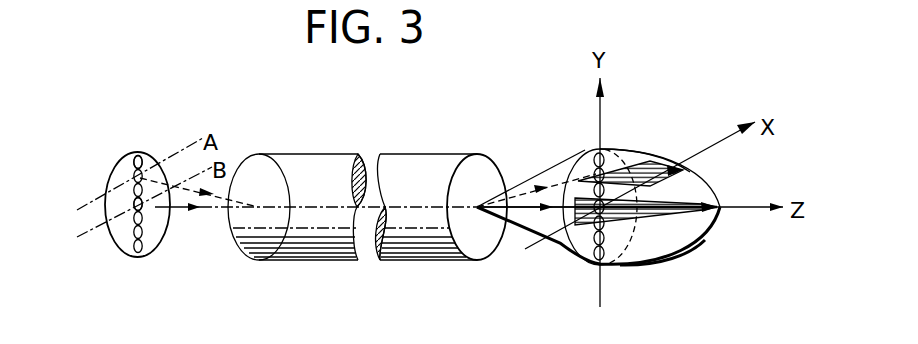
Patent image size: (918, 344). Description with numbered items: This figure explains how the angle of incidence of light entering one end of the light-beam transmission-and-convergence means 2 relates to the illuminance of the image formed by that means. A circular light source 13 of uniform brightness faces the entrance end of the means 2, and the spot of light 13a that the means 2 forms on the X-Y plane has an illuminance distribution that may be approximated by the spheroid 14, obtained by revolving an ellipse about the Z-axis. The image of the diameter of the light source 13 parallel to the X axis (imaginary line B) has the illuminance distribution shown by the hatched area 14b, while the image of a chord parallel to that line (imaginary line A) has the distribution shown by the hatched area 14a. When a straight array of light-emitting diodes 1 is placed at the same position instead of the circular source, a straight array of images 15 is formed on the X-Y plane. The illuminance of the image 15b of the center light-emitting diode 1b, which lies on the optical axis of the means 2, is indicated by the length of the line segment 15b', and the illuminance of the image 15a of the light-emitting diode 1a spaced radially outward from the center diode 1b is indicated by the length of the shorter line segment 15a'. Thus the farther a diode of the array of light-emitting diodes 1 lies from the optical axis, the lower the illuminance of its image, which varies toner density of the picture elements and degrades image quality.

The light-emitting diodes 1 is at (135, 257).
The light-emitting diode 1a is at (137, 175).
The center light-emitting diode 1b is at (134, 204).
The light-beam transmission-and-convergence means 2 is at (312, 158).
The light source 13 is at (122, 236).
The spot of light 13a is at (582, 244).
The spheroid 14 is at (650, 265).
The hatched area 14a is at (630, 168).
The hatched area 14b is at (660, 218).
The images of light-emitting diodes 15 is at (613, 255).
The image of light-emitting diode 15a is at (537, 166).
The image of center light-emitting diode 15b is at (528, 221).
The line segment 15a' is at (646, 148).
The line segment 15b' is at (667, 190).